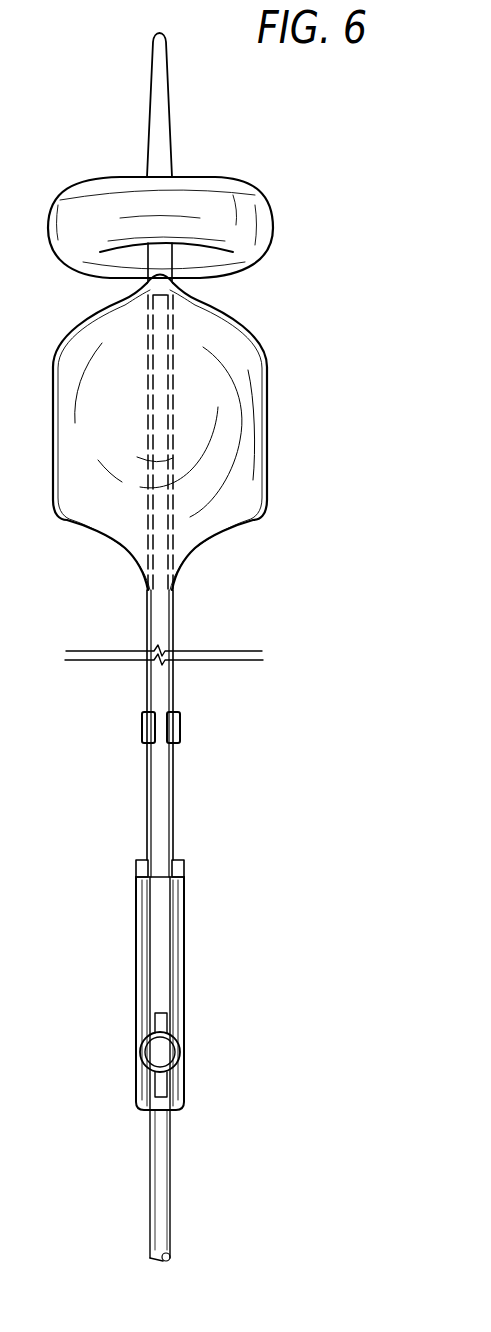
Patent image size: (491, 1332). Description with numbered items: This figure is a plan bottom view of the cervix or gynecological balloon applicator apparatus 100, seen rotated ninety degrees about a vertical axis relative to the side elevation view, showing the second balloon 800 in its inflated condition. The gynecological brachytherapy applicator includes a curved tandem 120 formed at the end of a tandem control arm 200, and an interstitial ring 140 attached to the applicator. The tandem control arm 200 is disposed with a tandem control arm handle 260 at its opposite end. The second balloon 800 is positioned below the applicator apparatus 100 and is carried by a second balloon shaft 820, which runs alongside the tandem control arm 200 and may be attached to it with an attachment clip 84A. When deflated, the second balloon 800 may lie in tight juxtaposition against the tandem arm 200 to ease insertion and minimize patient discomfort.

The gynecological applicator apparatus 100 is at (253, 750).
The curved tandem 120 is at (153, 110).
The interstitial ring 140 is at (88, 198).
The second balloon 800 is at (252, 425).
The second balloon shaft 820 is at (157, 797).
The tandem control arm 200 is at (175, 778).
The attachment clip 84A is at (142, 727).
The tandem control arm handle 260 is at (185, 927).